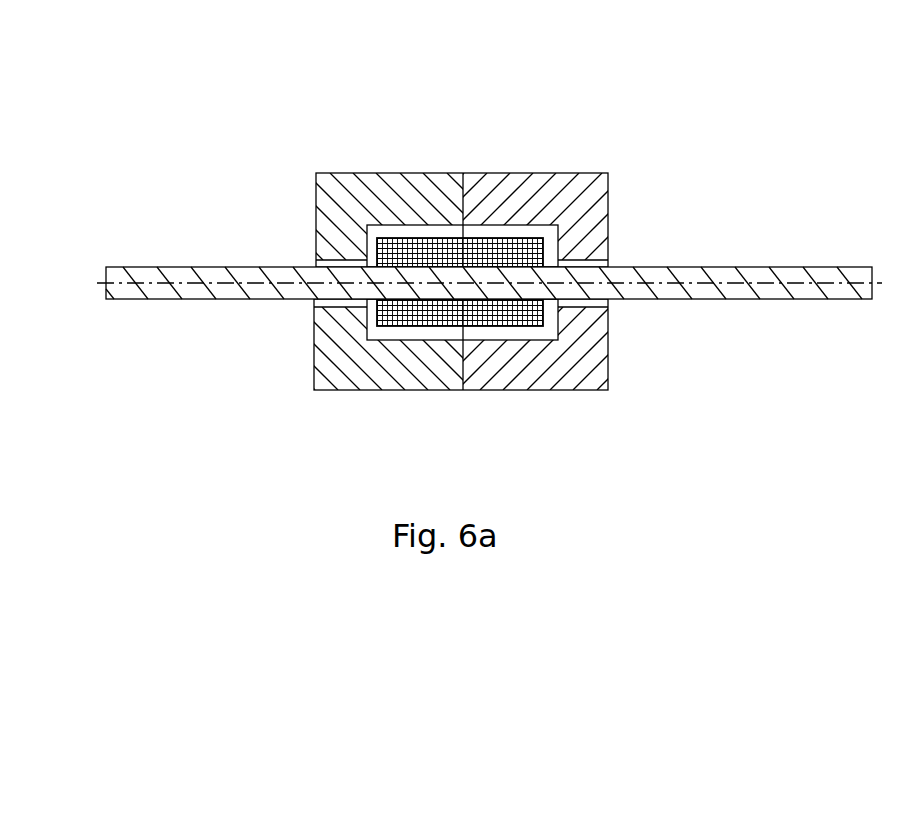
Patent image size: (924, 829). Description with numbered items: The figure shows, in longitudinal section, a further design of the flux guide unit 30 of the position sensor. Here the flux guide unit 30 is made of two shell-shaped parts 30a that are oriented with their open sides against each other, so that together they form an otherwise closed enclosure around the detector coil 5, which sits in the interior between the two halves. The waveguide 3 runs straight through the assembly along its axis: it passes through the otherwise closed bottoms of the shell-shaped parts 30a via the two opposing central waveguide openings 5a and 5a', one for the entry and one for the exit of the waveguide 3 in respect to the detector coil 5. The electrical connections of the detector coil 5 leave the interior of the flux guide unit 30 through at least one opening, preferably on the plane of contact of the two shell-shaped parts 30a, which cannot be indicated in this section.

The flux guide unit 30 is at (490, 157).
The housing halves 30a is at (463, 281).
The frontal opening 5a is at (263, 256).
The frontal opening 5a' is at (651, 254).
The detector coil 5 is at (407, 325).
The waveguide 3 is at (857, 273).